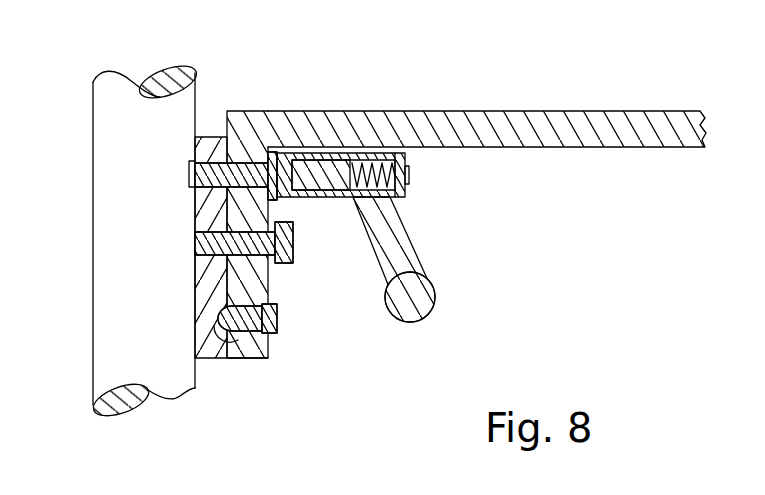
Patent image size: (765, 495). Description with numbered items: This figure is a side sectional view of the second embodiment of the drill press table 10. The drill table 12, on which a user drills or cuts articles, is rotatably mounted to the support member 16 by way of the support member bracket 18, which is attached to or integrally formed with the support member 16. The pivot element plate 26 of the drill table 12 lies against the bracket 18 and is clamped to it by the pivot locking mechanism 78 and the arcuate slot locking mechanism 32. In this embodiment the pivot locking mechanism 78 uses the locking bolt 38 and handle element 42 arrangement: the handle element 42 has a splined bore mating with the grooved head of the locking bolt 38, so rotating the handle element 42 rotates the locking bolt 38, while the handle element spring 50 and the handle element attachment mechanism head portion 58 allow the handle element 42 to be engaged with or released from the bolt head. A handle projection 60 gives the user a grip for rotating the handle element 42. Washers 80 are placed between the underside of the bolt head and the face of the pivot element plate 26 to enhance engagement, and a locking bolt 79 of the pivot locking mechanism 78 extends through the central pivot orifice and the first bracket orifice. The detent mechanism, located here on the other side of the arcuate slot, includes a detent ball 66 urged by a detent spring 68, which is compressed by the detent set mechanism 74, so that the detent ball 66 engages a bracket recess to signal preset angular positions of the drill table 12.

The drill press table 10 is at (205, 107).
The drill table 12 is at (593, 112).
The support member 16 is at (90, 305).
The support member bracket 18 is at (205, 220).
The pivot element plate 26 is at (233, 358).
The arcuate slot locking mechanism 32 is at (470, 183).
The locking bolt 38 is at (240, 162).
The handle element 42 is at (398, 258).
The handle element spring 50 is at (383, 153).
The handle element attachment mechanism head portion 58 is at (407, 162).
The handle projection 60 is at (407, 297).
The detent ball 66 is at (210, 360).
The detent spring 68 is at (243, 343).
The detent set mechanism 74 is at (277, 312).
The pivot locking mechanism 78 is at (313, 240).
The locking bolt 79 is at (210, 272).
The washers 80 is at (284, 152).